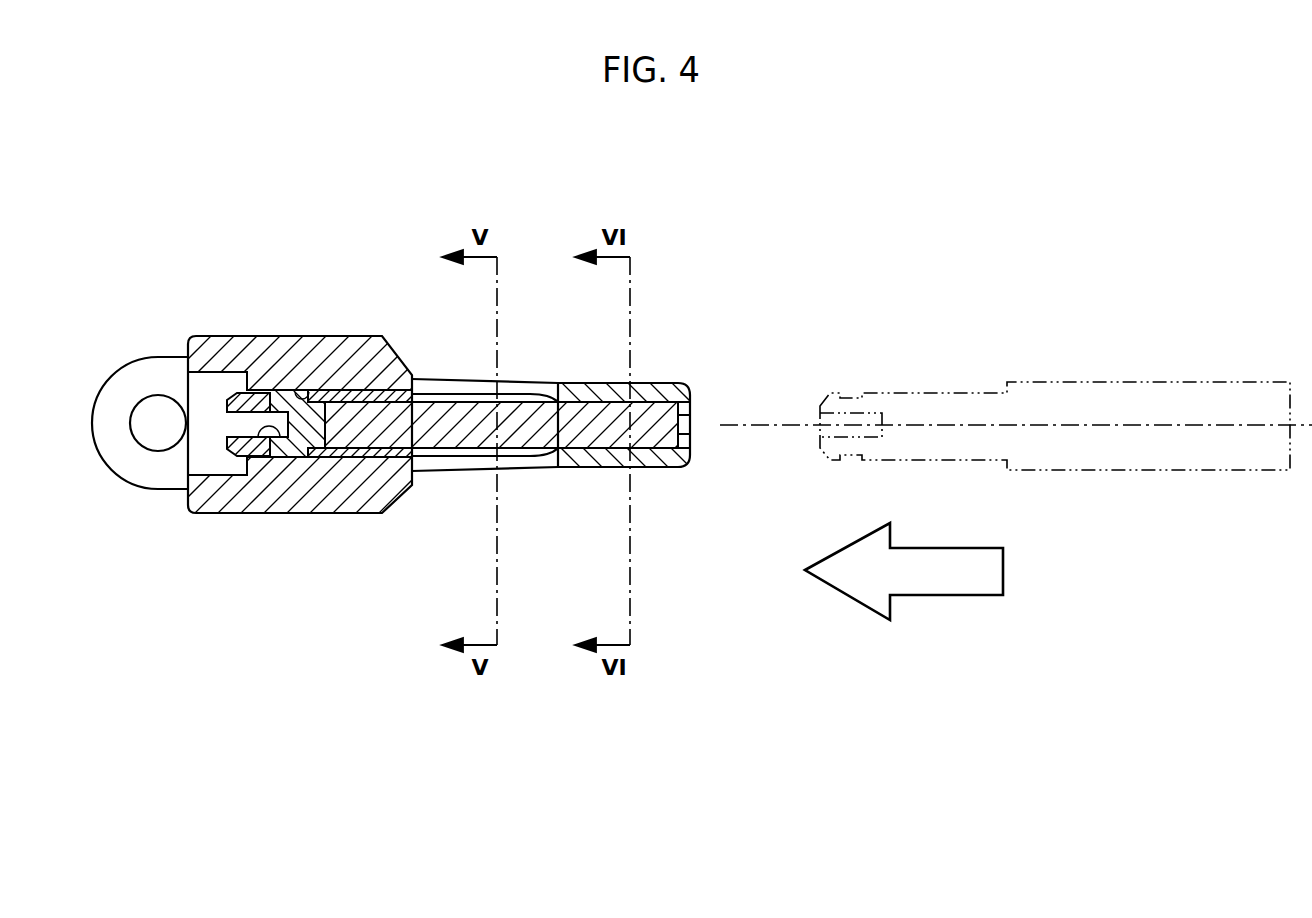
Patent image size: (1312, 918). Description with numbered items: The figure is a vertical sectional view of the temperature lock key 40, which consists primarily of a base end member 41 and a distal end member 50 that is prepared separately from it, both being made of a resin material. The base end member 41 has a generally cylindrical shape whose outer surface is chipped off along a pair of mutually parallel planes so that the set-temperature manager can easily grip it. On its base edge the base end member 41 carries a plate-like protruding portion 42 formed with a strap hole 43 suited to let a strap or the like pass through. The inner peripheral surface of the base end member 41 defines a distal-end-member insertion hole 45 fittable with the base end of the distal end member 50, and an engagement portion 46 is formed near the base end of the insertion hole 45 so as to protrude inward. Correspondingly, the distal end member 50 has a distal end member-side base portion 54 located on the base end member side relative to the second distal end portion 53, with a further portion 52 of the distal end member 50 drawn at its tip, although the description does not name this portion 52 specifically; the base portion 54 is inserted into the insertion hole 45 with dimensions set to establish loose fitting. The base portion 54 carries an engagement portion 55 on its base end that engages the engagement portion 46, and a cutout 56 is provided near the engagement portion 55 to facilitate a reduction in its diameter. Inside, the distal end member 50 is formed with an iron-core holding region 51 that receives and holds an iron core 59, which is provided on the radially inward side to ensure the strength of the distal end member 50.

The temperature lock key 40 is at (262, 273).
The base end member 41 is at (220, 337).
The plate-like protruding portion 42 is at (118, 370).
The strap hole 43 is at (140, 447).
The distal-end-member insertion hole 45 is at (305, 392).
The engagement portion 46 is at (262, 458).
The distal end member 50 is at (706, 346).
The iron-core holding region 51 is at (690, 415).
The sleeve 52 is at (648, 383).
The second distal end portion 53 is at (513, 379).
The distal end member-side base portion 54 is at (333, 458).
The engagement portion 55 is at (235, 462).
The cutout 56 is at (281, 437).
The iron core 59 is at (690, 434).